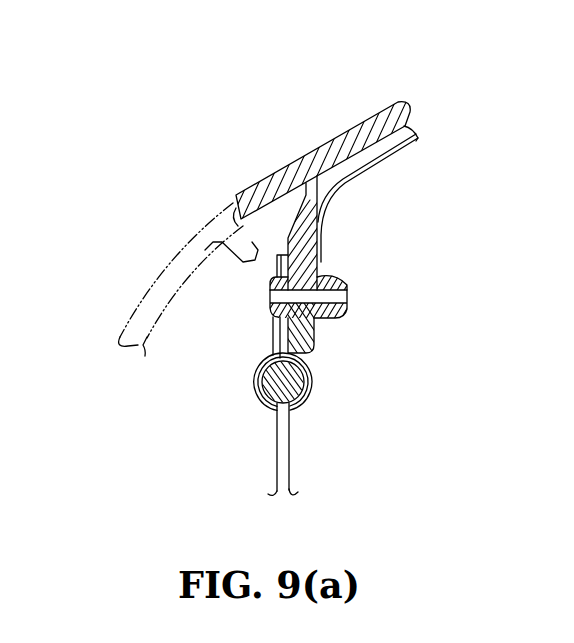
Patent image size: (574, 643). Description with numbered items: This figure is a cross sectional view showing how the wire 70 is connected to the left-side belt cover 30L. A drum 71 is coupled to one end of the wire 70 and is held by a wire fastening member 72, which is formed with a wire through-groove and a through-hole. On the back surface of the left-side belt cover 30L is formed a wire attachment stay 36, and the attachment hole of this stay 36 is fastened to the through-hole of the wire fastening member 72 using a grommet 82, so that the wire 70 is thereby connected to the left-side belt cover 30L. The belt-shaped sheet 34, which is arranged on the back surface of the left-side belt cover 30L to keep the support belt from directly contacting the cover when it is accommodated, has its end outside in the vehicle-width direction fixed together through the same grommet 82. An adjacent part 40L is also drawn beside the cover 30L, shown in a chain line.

The left-side belt cover 30L is at (352, 128).
The left cover member 40L is at (157, 280).
The belt-shaped sheet 34 is at (385, 155).
The wire attachment stay 36 is at (319, 262).
The grommet 82 is at (342, 316).
The wire fastening member 72 is at (246, 383).
The drum 71 is at (303, 392).
The wire 70 is at (289, 454).